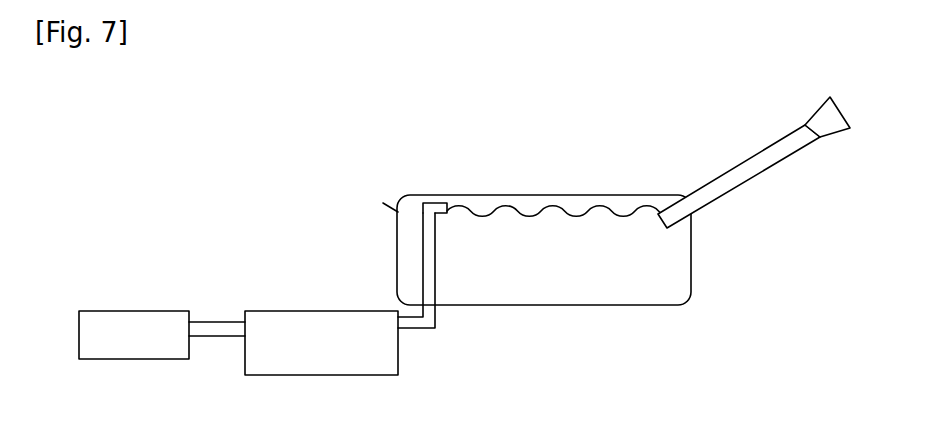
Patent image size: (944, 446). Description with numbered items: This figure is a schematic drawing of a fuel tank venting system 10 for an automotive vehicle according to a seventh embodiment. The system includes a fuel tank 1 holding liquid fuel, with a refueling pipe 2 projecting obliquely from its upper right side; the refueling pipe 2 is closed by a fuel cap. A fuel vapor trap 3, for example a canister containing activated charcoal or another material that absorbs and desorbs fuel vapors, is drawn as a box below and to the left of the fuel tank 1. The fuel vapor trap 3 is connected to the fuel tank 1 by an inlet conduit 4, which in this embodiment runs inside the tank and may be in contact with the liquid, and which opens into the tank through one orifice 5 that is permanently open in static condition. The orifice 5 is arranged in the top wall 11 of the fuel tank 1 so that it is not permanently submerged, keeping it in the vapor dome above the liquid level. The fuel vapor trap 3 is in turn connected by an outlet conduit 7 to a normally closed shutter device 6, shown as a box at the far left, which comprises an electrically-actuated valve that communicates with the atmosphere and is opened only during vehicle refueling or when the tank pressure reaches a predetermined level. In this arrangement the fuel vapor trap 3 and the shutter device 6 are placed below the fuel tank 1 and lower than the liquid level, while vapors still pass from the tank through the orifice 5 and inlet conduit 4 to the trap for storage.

The fuel tank 1 is at (678, 304).
The refueling pipe 2 is at (765, 172).
The fuel vapor trap 3 is at (270, 311).
The inlet conduit 4 is at (437, 322).
The orifice 5 is at (450, 207).
The normally closed shutter device 6 is at (118, 358).
The outlet conduit 7 is at (220, 320).
The fuel tank venting system 10 is at (298, 156).
The top wall 11 is at (605, 197).